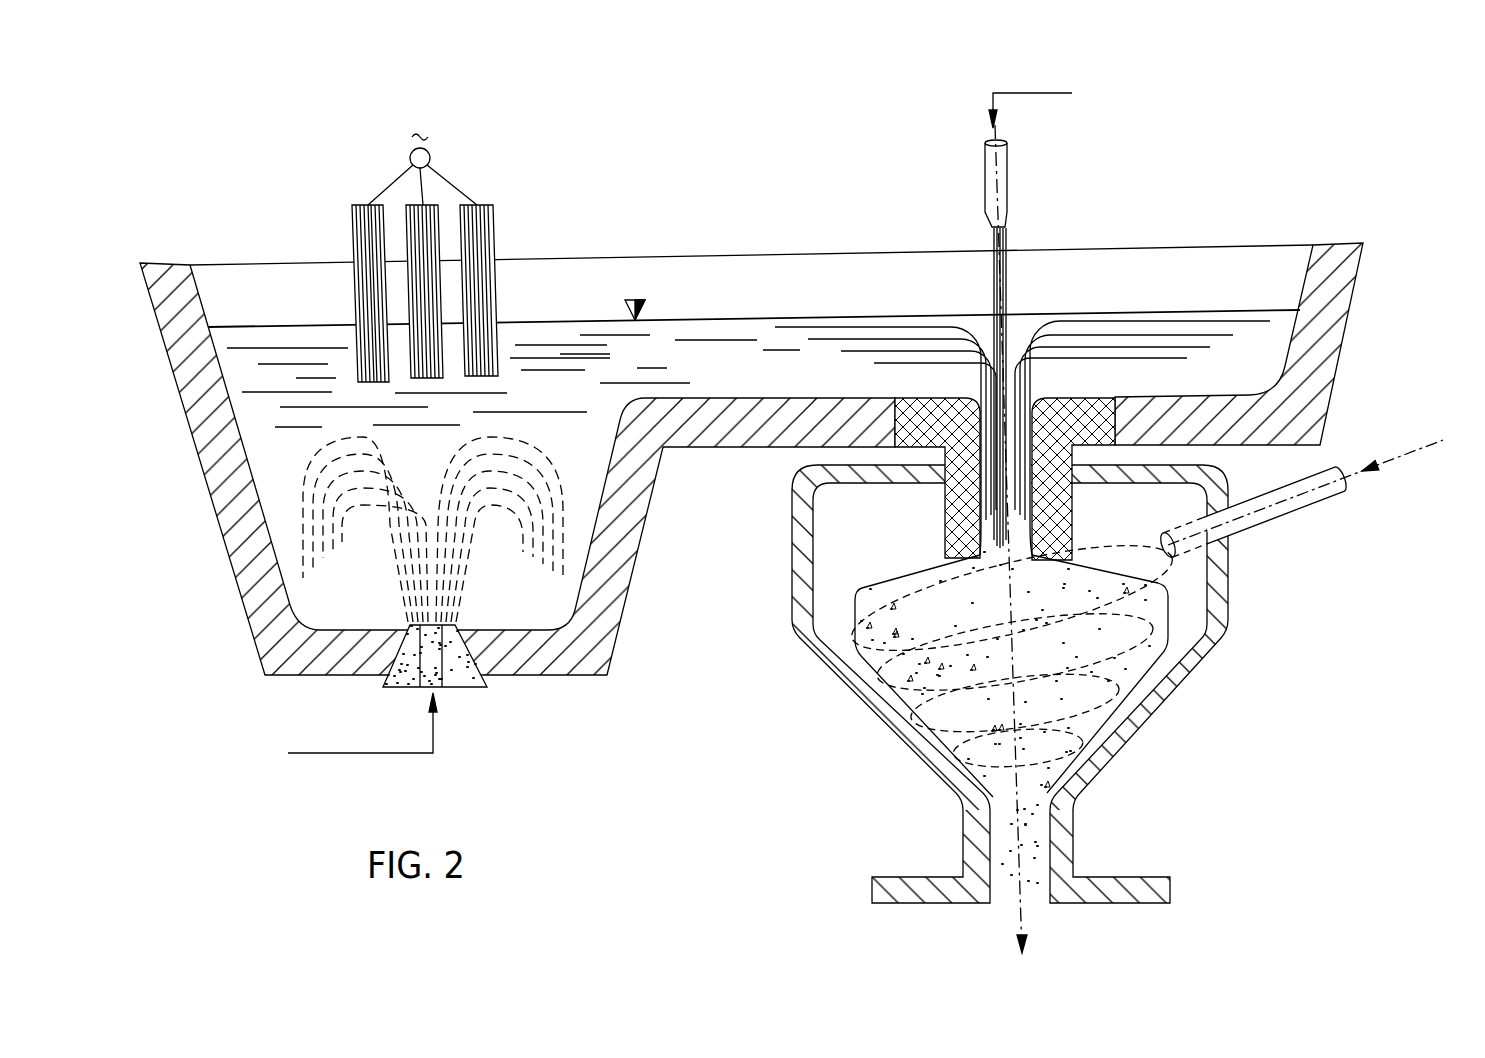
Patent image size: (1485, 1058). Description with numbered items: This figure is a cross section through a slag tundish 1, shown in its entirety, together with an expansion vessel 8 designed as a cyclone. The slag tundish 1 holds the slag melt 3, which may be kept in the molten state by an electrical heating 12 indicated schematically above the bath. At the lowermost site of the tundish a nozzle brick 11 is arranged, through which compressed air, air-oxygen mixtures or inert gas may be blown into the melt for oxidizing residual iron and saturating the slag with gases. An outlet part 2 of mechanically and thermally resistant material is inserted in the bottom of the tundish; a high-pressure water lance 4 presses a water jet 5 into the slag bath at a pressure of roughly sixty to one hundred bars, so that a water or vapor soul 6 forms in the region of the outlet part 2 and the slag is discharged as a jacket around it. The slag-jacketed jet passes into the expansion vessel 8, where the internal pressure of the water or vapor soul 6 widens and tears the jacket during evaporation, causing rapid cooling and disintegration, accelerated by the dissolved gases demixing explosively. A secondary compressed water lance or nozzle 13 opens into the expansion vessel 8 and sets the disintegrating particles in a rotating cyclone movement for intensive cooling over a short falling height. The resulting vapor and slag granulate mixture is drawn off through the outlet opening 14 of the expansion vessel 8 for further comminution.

The slag tundish 1 is at (1330, 296).
The outlet part 2 is at (933, 423).
The slag melt 3 is at (787, 380).
The high-pressure water lance 4 is at (1000, 188).
The water jet 5 is at (1003, 282).
The water or vapor soul 6 is at (1007, 493).
The expansion vessel 8 is at (1220, 580).
The nozzle brick 11 is at (473, 667).
The electrical heating 12 is at (477, 237).
The secondary compressed water lance or nozzle 13 is at (1287, 510).
The outlet opening 14 is at (985, 888).